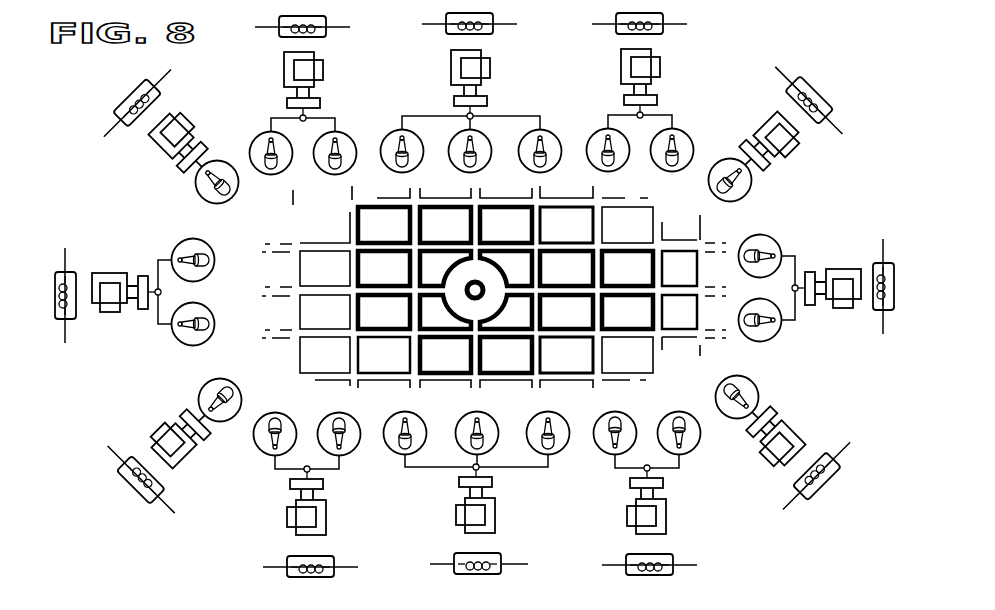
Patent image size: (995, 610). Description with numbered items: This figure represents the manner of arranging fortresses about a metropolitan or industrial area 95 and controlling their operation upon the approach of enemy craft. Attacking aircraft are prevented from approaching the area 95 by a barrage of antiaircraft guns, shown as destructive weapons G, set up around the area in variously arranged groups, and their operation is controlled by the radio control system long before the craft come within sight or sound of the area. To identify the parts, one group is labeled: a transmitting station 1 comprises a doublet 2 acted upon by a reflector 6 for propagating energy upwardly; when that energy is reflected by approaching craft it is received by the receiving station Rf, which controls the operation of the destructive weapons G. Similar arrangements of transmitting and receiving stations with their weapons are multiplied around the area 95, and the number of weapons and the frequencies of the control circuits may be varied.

The metropolitan or industrial area 95 is at (484, 273).
The destructive weapons G is at (448, 438).
The receiving station Rf is at (487, 512).
The transmitting station 1 is at (441, 569).
The reflector 6 is at (491, 570).
The doublet 2 is at (519, 566).